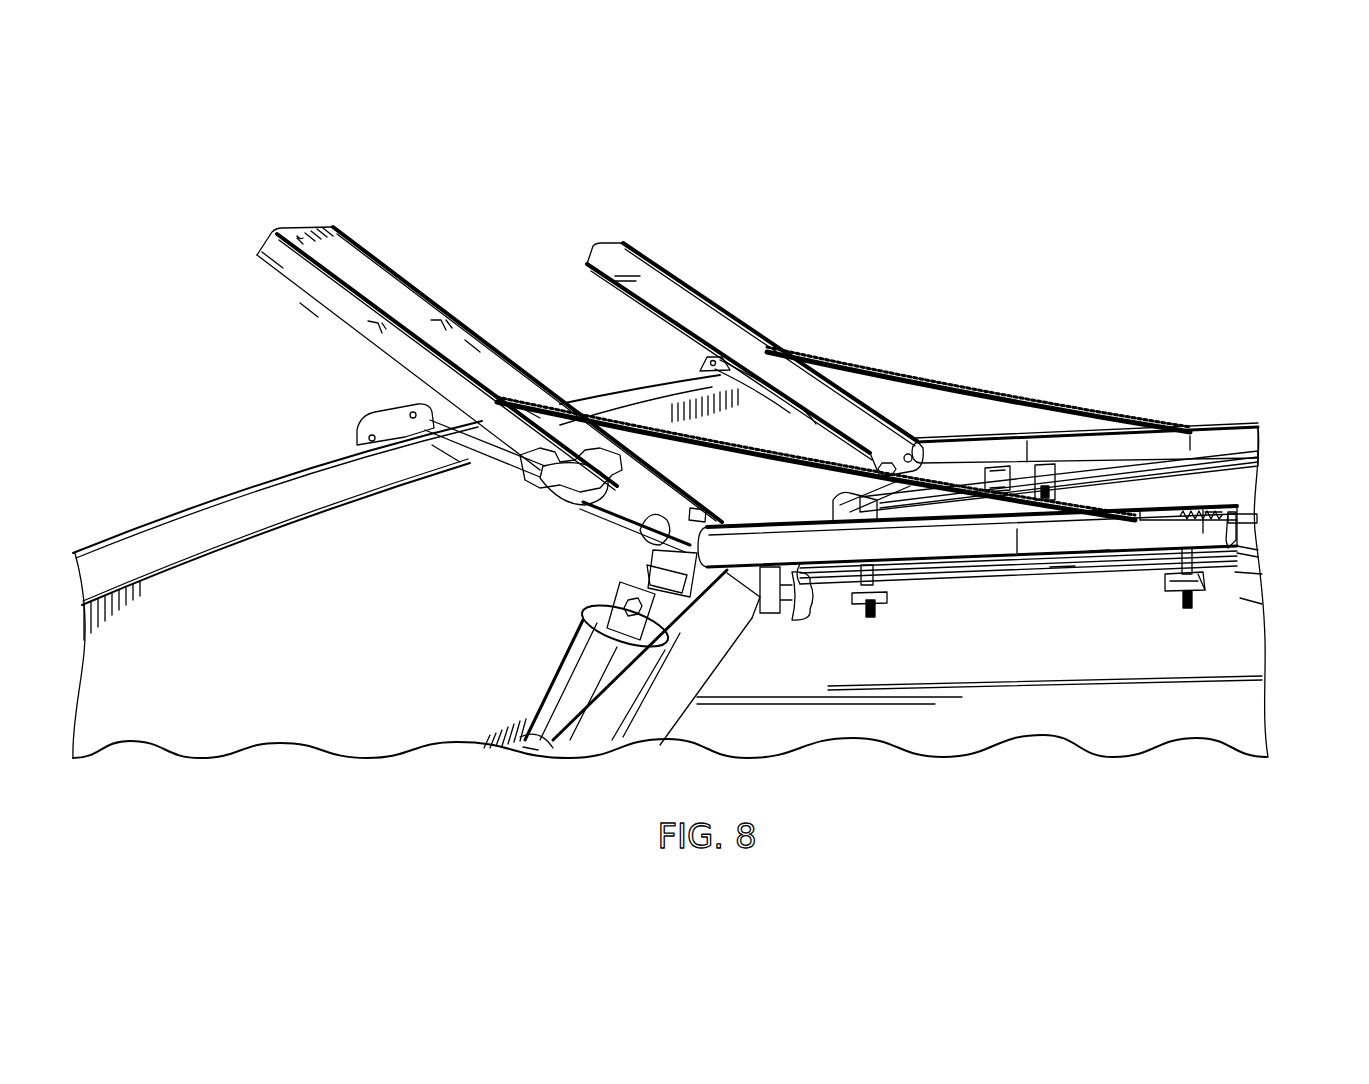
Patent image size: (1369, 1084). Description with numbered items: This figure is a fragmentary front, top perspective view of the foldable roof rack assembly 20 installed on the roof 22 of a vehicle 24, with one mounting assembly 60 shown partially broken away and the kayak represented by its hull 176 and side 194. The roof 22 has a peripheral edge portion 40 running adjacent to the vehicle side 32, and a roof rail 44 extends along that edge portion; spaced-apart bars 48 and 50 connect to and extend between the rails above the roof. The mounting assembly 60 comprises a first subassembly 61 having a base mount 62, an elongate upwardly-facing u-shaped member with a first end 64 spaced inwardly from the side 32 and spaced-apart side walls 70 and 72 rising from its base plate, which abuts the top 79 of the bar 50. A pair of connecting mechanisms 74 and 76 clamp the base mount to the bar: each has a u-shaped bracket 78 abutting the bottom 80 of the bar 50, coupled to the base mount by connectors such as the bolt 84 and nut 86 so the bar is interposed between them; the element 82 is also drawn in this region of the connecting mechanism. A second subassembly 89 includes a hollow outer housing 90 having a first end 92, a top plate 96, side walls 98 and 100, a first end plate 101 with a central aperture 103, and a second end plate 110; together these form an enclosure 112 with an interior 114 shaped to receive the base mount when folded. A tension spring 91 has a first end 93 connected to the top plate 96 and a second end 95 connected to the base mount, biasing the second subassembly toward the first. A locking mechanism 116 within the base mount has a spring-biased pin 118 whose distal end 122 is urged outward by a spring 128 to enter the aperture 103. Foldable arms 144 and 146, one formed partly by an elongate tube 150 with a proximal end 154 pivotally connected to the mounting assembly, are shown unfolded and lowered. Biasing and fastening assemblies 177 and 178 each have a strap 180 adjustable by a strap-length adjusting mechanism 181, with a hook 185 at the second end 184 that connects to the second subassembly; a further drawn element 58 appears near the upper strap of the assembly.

The foldable roof rack assembly 20 is at (1297, 413).
The roof 22 is at (1001, 733).
The vehicle 24 is at (1270, 668).
The side 32 is at (530, 748).
The peripheral edge portion 40 is at (733, 642).
The roof rail 44 is at (687, 675).
The bar 48 is at (1100, 470).
The bar 50 is at (1025, 570).
The upper strap 58 is at (1115, 412).
The mounting assembly 60 is at (975, 565).
The first subassembly 61 is at (1063, 569).
The base mount 62 is at (1100, 552).
The first end 64 is at (1263, 603).
The side wall 70 is at (1157, 513).
The side wall 72 is at (917, 549).
The connecting mechanism 74 is at (872, 626).
The connecting mechanism 76 is at (1175, 608).
The u-shaped bracket 78 is at (1208, 577).
The top 79 is at (1255, 549).
The bottom 80 is at (1252, 575).
The stem 82 is at (1170, 584).
The bolt 84 is at (1176, 566).
The nut 86 is at (1208, 579).
The second subassembly 89 is at (278, 284).
The outer housing 90 is at (395, 275).
The tension spring 91 is at (657, 430).
The first end 92 is at (300, 228).
The first end 93 is at (530, 413).
The second end 95 is at (1140, 517).
The top plate 96 is at (313, 303).
The side wall 98 is at (440, 323).
The side wall 100 is at (367, 336).
The first end plate 101 is at (309, 230).
The aperture 103 is at (298, 238).
The second end plate 110 is at (760, 613).
The enclosure 112 is at (543, 377).
The interior 114 is at (473, 347).
The locking mechanism 116 is at (1213, 500).
The spring-biased pin 118 is at (1263, 518).
The distal end 122 is at (1253, 512).
The spring 128 is at (1240, 507).
The foldable arm 144 is at (830, 497).
The foldable arm 146 is at (554, 673).
The elongate tube 150 is at (628, 624).
The proximal end 154 is at (640, 592).
The hull 176 is at (265, 545).
The biasing and fastening assembly 177 is at (753, 383).
The biasing and fastening assembly 178 is at (437, 445).
The strap 180 is at (473, 433).
The strap-length adjusting mechanism 181 is at (382, 427).
The second end 184 is at (697, 517).
The hook 185 is at (655, 513).
The side 194 is at (226, 609).